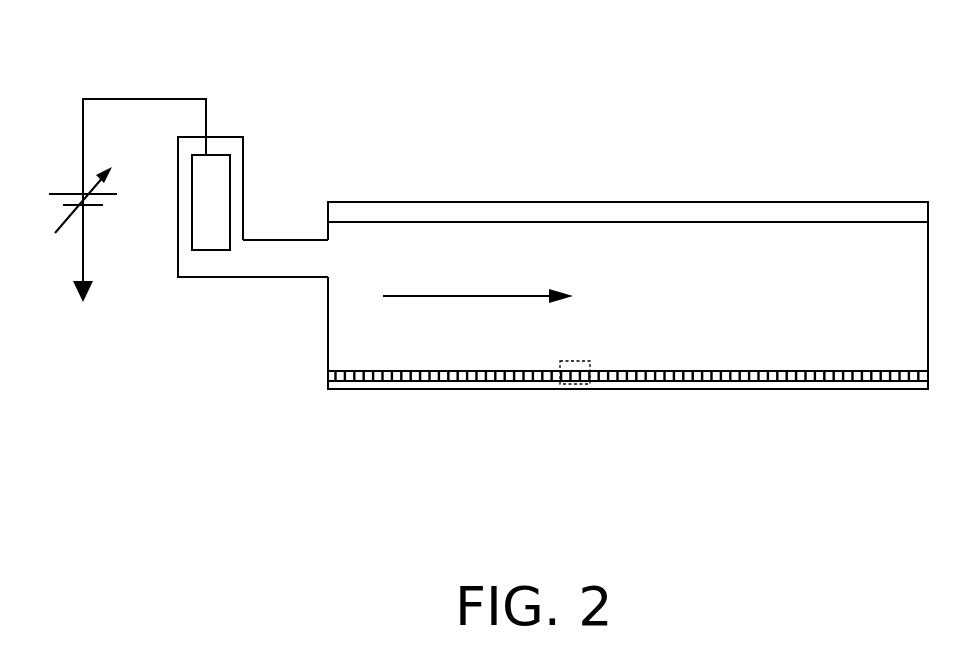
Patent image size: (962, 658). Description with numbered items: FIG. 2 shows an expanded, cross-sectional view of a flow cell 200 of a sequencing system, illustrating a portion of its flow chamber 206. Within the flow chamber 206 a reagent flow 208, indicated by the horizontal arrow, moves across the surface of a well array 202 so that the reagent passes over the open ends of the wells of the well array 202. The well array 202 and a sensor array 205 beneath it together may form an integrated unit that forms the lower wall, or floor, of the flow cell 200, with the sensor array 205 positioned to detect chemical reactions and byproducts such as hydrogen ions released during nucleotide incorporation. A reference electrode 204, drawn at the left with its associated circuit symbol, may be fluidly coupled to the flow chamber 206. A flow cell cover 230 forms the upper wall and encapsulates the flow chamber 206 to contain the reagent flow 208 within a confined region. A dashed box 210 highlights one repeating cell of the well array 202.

The flow cell 200 is at (359, 78).
The well array 202 is at (853, 387).
The reference electrode 204 is at (207, 230).
The sensor array 205 is at (795, 390).
The flow chamber 206 is at (688, 237).
The reagent flow 208 is at (463, 290).
The grating unit cell 210 is at (575, 387).
The flow cell cover 230 is at (800, 213).